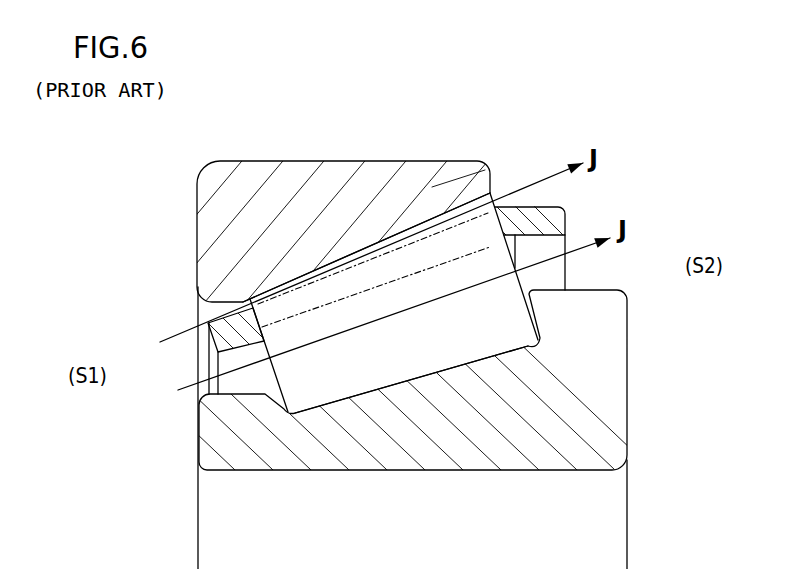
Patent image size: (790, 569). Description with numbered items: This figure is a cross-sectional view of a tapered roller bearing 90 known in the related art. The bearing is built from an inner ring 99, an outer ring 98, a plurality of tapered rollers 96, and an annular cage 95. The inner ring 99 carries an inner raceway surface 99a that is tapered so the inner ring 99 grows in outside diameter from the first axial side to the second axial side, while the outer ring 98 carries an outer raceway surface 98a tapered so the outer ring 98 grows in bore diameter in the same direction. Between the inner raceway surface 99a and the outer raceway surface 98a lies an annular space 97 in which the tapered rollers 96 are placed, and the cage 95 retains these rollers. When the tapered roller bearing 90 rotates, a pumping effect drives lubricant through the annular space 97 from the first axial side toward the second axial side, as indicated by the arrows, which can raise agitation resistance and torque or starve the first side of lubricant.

The tapered roller bearing 90 is at (240, 156).
The annular cage 95 is at (548, 206).
The tapered rollers 96 is at (448, 352).
The annular space 97 is at (337, 354).
The outer ring 98 is at (303, 178).
The outer raceway surface 98a is at (400, 230).
The inner ring 99 is at (527, 447).
The inner raceway surface 99a is at (424, 371).